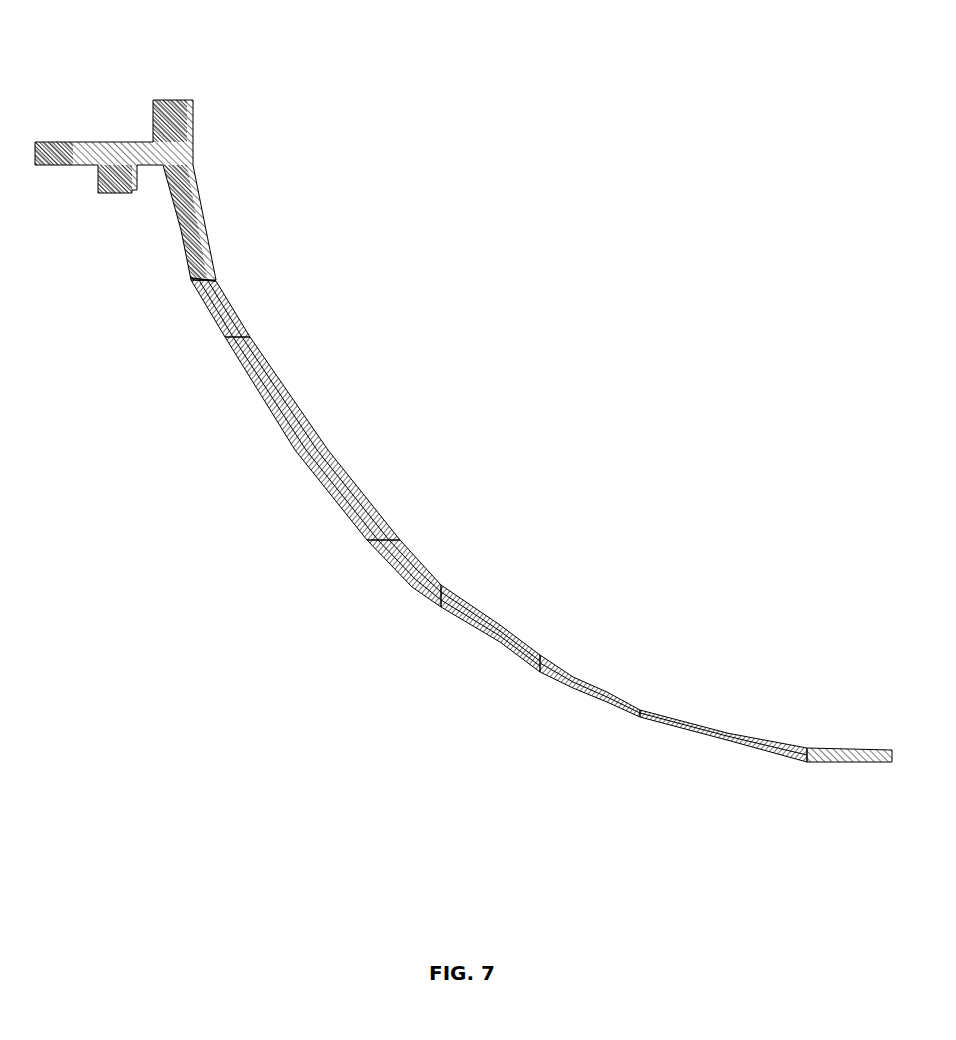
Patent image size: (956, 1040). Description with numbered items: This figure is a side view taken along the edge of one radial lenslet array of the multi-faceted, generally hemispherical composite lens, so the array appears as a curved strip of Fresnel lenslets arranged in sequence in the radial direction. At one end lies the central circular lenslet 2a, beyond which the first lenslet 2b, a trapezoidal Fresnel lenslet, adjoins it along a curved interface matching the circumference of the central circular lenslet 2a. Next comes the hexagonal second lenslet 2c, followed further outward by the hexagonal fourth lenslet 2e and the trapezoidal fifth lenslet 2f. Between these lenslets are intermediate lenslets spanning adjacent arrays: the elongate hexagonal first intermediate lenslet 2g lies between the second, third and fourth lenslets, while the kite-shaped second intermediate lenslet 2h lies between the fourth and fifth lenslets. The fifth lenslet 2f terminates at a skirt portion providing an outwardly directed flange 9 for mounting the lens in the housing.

The outwardly directed flange 9 is at (108, 155).
The fifth lenslet 2f is at (213, 291).
The second intermediate lenslet 2h is at (305, 450).
The fourth lenslet 2e is at (388, 552).
The first intermediate lenslet 2g is at (441, 585).
The second lenslet 2c is at (607, 702).
The first lenslet 2b is at (727, 740).
The central circular lenslet 2a is at (859, 755).